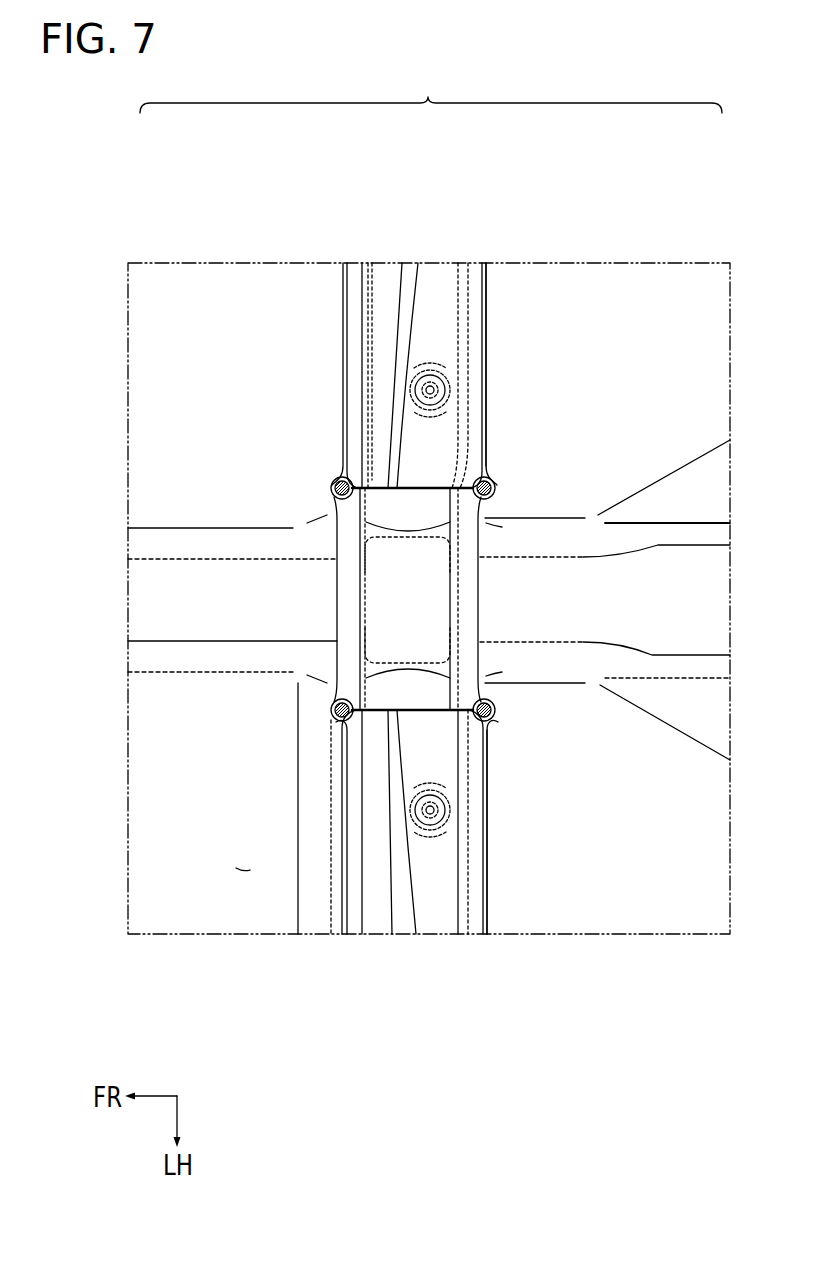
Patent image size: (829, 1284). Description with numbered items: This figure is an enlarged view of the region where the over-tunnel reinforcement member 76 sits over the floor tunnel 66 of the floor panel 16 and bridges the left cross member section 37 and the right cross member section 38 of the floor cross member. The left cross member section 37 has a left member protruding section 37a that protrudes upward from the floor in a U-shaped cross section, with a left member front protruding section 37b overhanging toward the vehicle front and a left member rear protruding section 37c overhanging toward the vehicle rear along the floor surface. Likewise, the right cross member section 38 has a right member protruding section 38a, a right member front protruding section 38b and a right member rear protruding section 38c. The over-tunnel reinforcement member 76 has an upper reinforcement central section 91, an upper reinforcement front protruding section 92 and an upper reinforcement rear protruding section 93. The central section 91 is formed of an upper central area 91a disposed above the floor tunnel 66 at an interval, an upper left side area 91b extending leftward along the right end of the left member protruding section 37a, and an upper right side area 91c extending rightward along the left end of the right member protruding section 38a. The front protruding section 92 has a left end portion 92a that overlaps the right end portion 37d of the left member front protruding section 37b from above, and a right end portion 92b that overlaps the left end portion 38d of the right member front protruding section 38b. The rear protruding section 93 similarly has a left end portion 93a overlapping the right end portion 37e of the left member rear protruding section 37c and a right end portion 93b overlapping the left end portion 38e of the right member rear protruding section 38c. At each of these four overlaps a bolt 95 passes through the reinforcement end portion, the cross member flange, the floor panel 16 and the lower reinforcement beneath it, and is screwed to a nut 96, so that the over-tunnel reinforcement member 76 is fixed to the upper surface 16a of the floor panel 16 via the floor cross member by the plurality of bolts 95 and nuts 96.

The floor panel 16 is at (201, 826).
The upper surface of floor panel 16a is at (242, 872).
The left cross member section 37 is at (464, 847).
The left member protruding section 37a is at (438, 875).
The left member front protruding section 37b is at (353, 843).
The left member rear protruding section 37c is at (478, 840).
The right end portion of left member front protruding section 37d is at (340, 730).
The right end portion of left member rear protruding section 37e is at (488, 723).
The right cross member section 38 is at (469, 341).
The right member protruding section 38a is at (430, 315).
The right member front protruding section 38b is at (350, 360).
The right member rear protruding section 38c is at (478, 310).
The left end portion of right member front protruding section 38d is at (333, 470).
The left end portion of right member rear protruding section 38e is at (490, 468).
The floor tunnel 66 is at (538, 562).
The over-tunnel reinforcement member 76 is at (431, 88).
The upper reinforcement central section 91 is at (318, 563).
The upper central area 91a is at (343, 595).
The upper left side area 91b is at (420, 692).
The upper right side area 91c is at (404, 540).
The upper reinforcement front protruding section 92 is at (276, 411).
The left end portion of upper reinforcement front protruding section 92a is at (337, 688).
The right end portion of upper reinforcement front protruding section 92b is at (338, 507).
The upper reinforcement rear protruding section 93 is at (596, 414).
The left end portion of upper reinforcement rear protruding section 93a is at (477, 695).
The right end portion of upper reinforcement rear protruding section 93b is at (490, 492).
The bolt 95 is at (425, 584).
The nut 96 is at (336, 488).